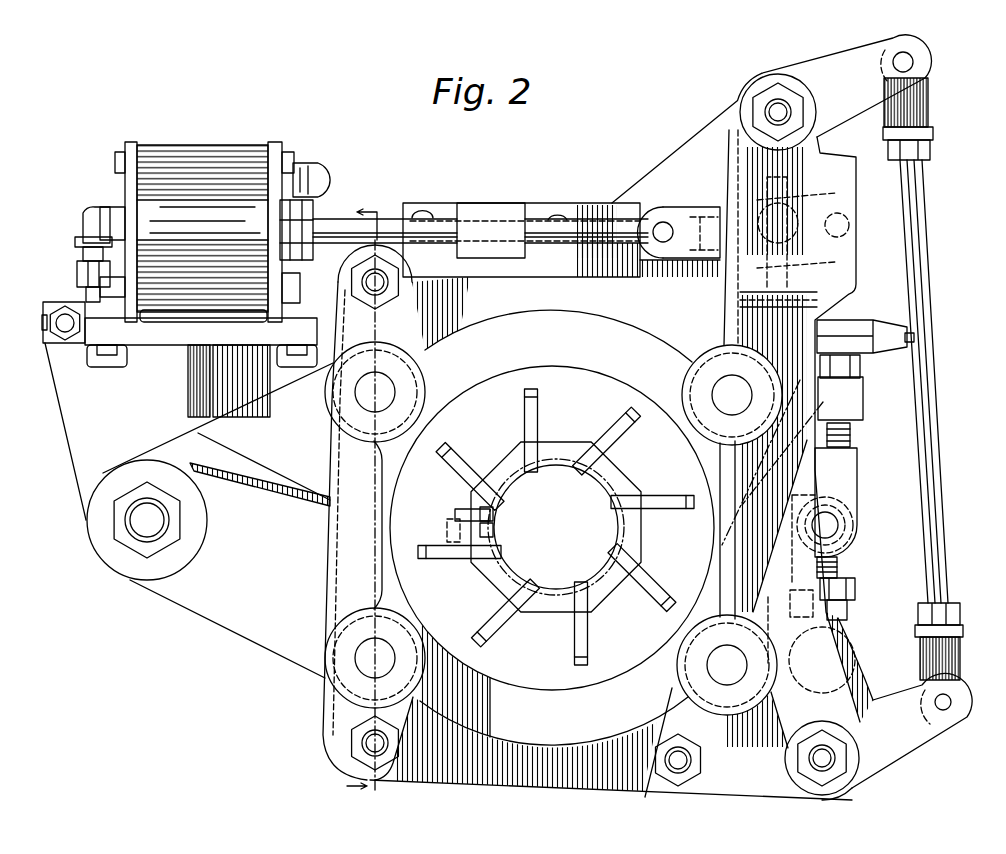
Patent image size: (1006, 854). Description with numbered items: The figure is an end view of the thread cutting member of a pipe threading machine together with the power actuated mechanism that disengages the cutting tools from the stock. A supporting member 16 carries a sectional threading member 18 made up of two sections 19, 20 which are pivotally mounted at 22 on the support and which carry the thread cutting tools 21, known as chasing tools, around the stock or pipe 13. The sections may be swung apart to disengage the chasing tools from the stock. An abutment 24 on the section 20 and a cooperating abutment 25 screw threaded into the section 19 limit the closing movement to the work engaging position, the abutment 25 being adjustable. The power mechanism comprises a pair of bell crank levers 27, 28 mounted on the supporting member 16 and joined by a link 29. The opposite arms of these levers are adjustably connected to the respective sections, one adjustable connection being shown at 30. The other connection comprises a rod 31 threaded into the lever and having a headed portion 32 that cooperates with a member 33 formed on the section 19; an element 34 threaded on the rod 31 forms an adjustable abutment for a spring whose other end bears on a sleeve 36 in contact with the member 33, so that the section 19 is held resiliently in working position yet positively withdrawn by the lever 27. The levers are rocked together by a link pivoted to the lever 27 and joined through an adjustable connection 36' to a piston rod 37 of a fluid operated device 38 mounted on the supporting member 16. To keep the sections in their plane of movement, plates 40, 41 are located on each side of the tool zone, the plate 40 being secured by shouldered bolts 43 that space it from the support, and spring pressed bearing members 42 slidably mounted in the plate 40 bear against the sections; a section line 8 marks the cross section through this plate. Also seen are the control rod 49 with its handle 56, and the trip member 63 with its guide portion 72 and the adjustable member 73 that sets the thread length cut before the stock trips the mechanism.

The section line 8 is at (365, 497).
The stock or pipe 13 is at (590, 485).
The supporting member 16 is at (548, 317).
The sectional threading member 18 is at (227, 630).
The section 19 is at (556, 527).
The section 20 is at (552, 542).
The thread cutting tools 21 is at (600, 436).
The pivot 22 is at (110, 548).
The abutment 24 is at (857, 459).
The cooperating abutment 25 is at (850, 432).
The bell crank lever 27 is at (820, 68).
The bell crank lever 28 is at (917, 742).
The link 29 is at (928, 392).
The adjustable connection 30 is at (850, 593).
The rod 31 is at (790, 283).
The headed portion 32 is at (772, 462).
The member 33 is at (790, 425).
The element 34 is at (810, 325).
The sleeve / link 36 is at (761, 279).
The adjustable connection 36' is at (640, 214).
The piston rod 37 is at (538, 222).
The fluid operated device 38 is at (205, 153).
The plate 40 is at (343, 560).
The plate 41 is at (733, 333).
The bearing member 42 is at (360, 393).
The shouldered bolt 43 is at (358, 278).
The rod 49 is at (863, 327).
The handle 56 is at (900, 346).
The member 63 is at (463, 509).
The guide portion 72 is at (494, 514).
The member 73 is at (494, 530).